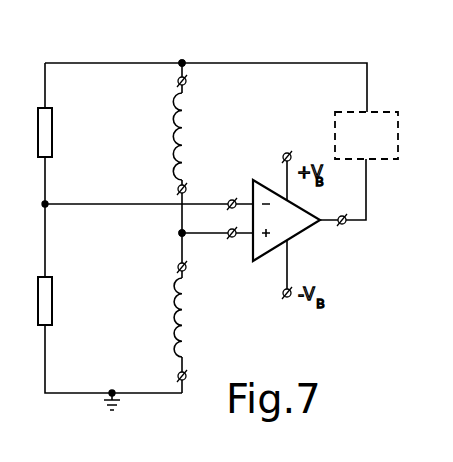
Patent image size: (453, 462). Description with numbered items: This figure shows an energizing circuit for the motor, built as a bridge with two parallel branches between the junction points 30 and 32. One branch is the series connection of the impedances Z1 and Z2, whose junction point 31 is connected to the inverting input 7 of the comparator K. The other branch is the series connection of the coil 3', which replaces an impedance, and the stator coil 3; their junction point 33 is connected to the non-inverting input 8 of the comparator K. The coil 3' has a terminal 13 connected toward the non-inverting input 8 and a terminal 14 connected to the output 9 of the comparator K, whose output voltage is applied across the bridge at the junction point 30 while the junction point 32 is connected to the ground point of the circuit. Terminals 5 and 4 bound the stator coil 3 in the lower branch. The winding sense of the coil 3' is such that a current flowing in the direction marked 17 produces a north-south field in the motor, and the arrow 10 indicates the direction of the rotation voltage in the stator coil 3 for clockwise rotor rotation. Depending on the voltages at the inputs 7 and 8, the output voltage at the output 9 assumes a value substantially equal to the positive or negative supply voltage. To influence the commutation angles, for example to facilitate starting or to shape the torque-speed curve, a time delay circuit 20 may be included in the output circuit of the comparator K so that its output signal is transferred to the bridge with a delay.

The junction point 30 is at (183, 62).
The terminal 14 is at (186, 83).
The coil 3' is at (193, 136).
The current direction 17 is at (163, 113).
The terminal 13 is at (186, 187).
The inverting input 7 is at (236, 197).
The junction point 31 is at (43, 204).
The junction point 33 is at (180, 233).
The non-inverting input 8 is at (234, 238).
The terminal of lower coil 5 is at (178, 267).
The comparator K is at (258, 263).
The output 9 is at (344, 225).
The time delay circuit 20 is at (391, 160).
The rotation voltage direction 10 is at (198, 273).
The stator coil 3 is at (167, 317).
The terminal of lower coil 4 is at (186, 379).
The junction point 32 is at (109, 397).
The impedance Z1 is at (52, 140).
The impedance Z2 is at (52, 310).